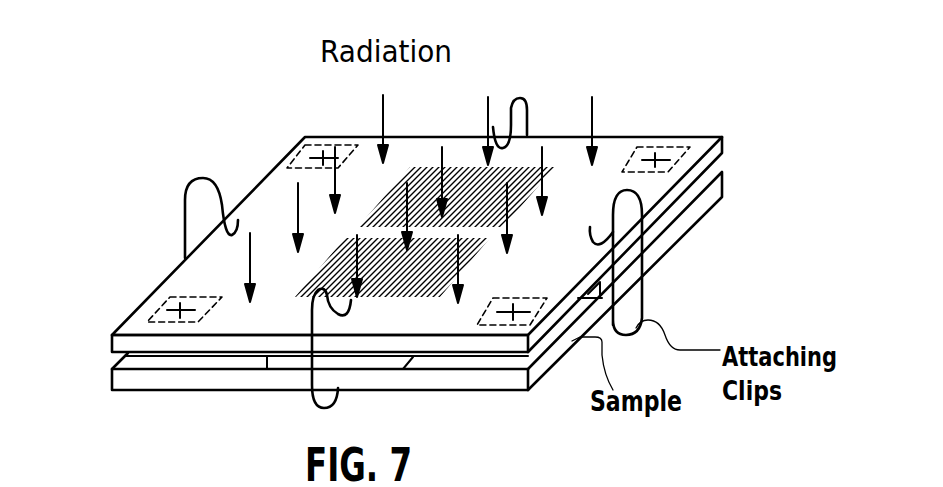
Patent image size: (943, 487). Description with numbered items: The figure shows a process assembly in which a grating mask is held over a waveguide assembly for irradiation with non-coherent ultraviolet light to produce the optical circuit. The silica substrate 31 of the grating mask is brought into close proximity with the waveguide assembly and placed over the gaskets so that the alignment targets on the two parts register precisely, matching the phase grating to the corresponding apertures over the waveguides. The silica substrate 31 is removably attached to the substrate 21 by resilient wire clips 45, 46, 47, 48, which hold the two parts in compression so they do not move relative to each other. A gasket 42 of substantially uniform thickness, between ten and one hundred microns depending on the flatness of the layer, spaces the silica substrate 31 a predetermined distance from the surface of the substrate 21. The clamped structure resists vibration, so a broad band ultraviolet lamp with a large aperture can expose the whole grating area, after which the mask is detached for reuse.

The substrate 21 is at (697, 205).
The silica substrate 31 is at (578, 236).
The gasket 42 is at (378, 366).
The resilient wire clip 45 is at (645, 280).
The resilient wire clip 46 is at (305, 357).
The resilient wire clip 47 is at (185, 193).
The resilient wire clip 48 is at (518, 100).